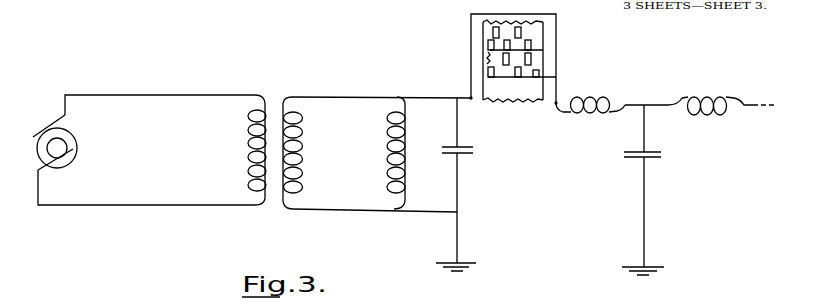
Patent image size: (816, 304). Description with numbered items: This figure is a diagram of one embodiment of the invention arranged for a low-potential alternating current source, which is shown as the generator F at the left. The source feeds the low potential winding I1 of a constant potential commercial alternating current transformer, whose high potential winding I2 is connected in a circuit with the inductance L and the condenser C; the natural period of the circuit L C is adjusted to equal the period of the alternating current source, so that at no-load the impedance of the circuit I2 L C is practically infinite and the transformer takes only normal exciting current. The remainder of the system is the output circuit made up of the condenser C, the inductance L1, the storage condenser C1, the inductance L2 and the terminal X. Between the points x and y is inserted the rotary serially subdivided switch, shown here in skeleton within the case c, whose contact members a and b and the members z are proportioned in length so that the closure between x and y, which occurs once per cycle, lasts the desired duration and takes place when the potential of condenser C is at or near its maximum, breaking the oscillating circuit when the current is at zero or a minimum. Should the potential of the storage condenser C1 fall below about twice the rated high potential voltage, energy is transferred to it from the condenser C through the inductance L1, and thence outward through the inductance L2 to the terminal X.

The generator / source of current F is at (82, 137).
The low potential winding I1 is at (243, 126).
The high potential winding I2 is at (333, 126).
The inductance L is at (381, 153).
The condenser C is at (498, 141).
The condenser (device) c is at (533, 43).
The switch member a is at (523, 30).
The switch member b is at (530, 60).
The contact segments z is at (533, 37).
The circuit point x is at (471, 102).
The circuit point y is at (555, 105).
The inductance L1 is at (597, 89).
The storage condenser C1 is at (653, 161).
The inductance L2 is at (703, 98).
The output terminal X is at (772, 107).